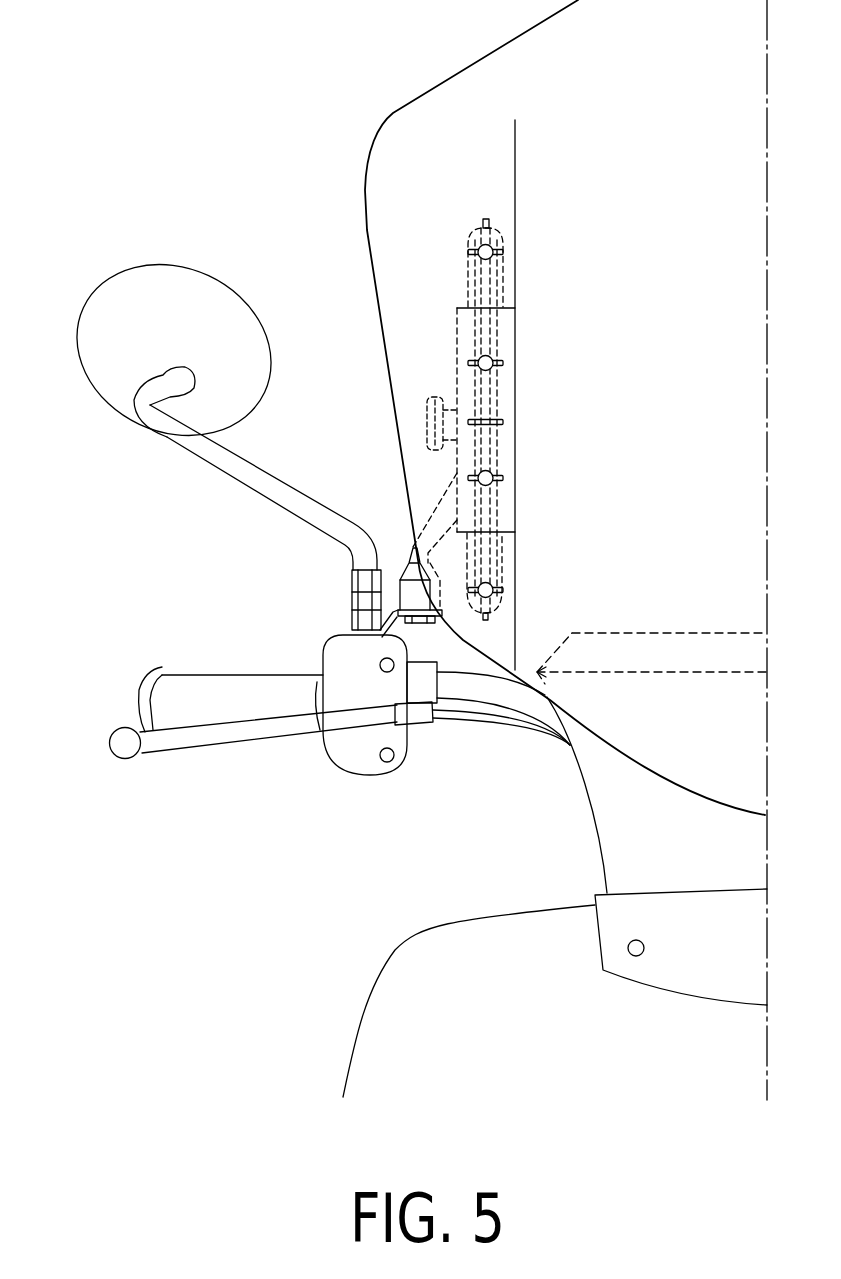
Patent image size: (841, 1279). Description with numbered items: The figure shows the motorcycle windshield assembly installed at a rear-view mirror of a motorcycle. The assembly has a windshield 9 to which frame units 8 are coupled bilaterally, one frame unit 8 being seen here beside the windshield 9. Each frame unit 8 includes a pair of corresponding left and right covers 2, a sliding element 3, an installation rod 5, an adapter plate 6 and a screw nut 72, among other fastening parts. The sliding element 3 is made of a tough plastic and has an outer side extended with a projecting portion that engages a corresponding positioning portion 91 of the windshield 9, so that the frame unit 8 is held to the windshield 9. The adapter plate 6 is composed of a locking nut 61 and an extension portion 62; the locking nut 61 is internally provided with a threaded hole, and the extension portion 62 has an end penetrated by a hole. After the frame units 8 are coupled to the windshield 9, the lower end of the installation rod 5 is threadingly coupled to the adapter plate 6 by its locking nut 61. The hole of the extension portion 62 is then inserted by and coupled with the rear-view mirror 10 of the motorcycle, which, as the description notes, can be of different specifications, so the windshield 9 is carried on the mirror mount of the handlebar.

The windshield 9 is at (428, 141).
The positioning portion 91 is at (487, 253).
The sliding element 3 is at (500, 286).
The covers 2 is at (460, 342).
The frame unit 8 is at (437, 313).
The screw nut 72 is at (427, 424).
The installation rod 5 is at (433, 503).
The rear-view mirror 10 is at (250, 480).
The adapter plate 6 is at (250, 602).
The locking nut 61 is at (410, 592).
The extension portion 62 is at (340, 630).